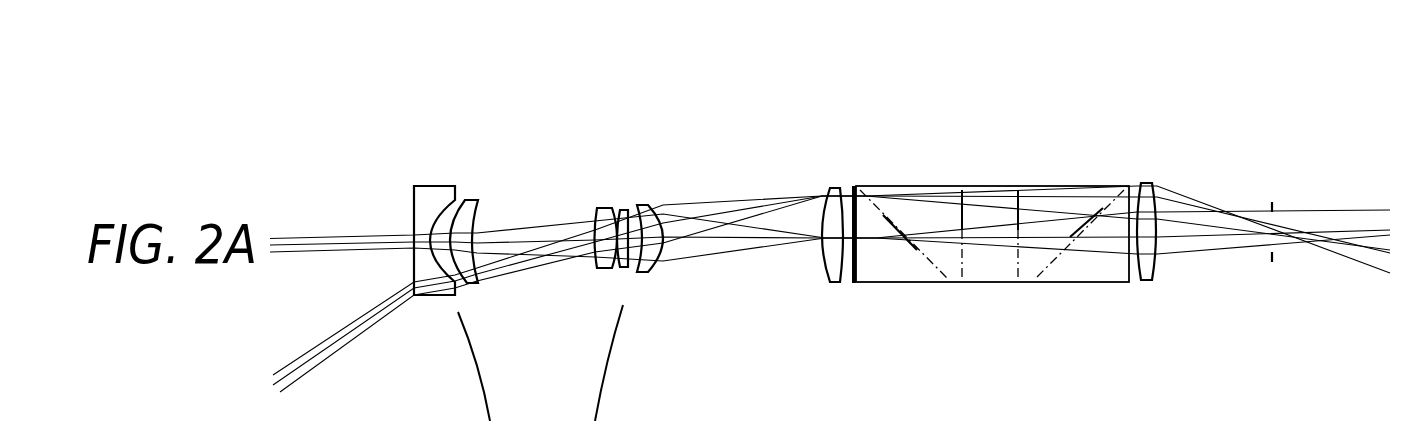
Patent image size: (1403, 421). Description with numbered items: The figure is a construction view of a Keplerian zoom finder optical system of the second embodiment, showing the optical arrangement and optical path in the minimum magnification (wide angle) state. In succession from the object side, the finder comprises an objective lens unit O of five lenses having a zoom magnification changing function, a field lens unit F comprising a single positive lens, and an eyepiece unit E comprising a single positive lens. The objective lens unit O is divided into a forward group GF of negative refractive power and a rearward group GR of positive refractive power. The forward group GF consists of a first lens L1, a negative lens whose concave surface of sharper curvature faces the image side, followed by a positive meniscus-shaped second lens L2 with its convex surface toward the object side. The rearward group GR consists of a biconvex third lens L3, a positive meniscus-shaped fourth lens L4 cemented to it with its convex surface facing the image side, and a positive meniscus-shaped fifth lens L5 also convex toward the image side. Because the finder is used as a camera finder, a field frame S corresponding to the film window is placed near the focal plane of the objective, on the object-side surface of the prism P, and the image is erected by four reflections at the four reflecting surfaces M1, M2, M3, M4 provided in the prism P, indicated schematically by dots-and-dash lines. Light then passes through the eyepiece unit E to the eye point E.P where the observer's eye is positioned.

The objective lens unit O is at (655, 69).
The forward group GF is at (412, 126).
The rearward group GR is at (688, 126).
The first lens L1 is at (440, 186).
The second lens L2 is at (477, 199).
The third lens L3 is at (600, 208).
The fourth lens L4 is at (623, 211).
The fifth lens L5 is at (647, 205).
The field lens unit F is at (813, 163).
The field frame S is at (847, 283).
The prism P is at (1130, 159).
The first reflecting surface M1 is at (912, 254).
The second reflecting surface M2 is at (962, 269).
The third reflecting surface M3 is at (1018, 254).
The fourth reflecting surface M4 is at (1047, 269).
The eyepiece unit E is at (1157, 159).
The eye point E.P is at (1270, 226).